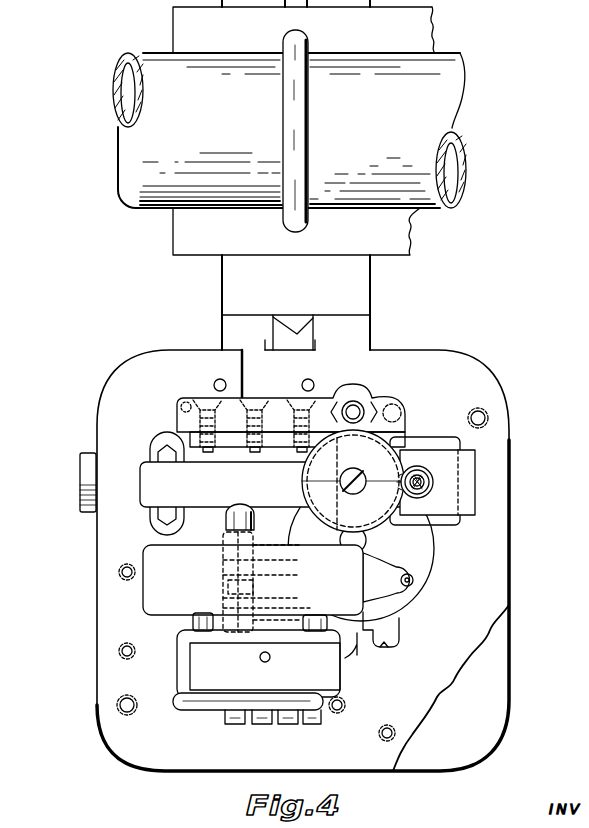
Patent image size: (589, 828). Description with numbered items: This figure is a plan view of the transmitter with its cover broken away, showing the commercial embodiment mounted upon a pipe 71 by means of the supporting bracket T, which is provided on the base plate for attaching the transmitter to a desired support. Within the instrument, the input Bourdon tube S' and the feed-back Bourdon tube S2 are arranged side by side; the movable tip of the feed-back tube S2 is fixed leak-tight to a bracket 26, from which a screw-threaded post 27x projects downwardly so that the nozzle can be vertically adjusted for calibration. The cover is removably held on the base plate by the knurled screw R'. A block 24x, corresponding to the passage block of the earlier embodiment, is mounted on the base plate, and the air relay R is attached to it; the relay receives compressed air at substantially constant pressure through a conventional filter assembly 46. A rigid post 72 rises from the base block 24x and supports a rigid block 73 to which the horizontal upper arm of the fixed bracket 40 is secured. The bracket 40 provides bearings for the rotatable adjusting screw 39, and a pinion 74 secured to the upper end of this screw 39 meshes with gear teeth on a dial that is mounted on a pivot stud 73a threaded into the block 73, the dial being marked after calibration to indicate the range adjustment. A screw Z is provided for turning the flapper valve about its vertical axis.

The pipe 71 is at (455, 92).
The supporting bracket T is at (360, 281).
The rigid post 72 is at (357, 408).
The rigid block 73 is at (369, 444).
The pivot stud 73a is at (340, 478).
The pinion 74 is at (414, 468).
The rotatable screw 39 is at (425, 480).
The fixed bracket 40 is at (450, 500).
The knurled screw R' is at (291, 549).
The filter assembly 46 is at (78, 482).
The input Bourdon tube S' is at (255, 483).
The feed-back Bourdon tube S2 is at (157, 558).
The bracket 26 is at (400, 569).
The screw-threaded post 27x is at (415, 581).
The screw Z is at (403, 643).
The block 24x is at (357, 653).
The air relay R is at (239, 668).